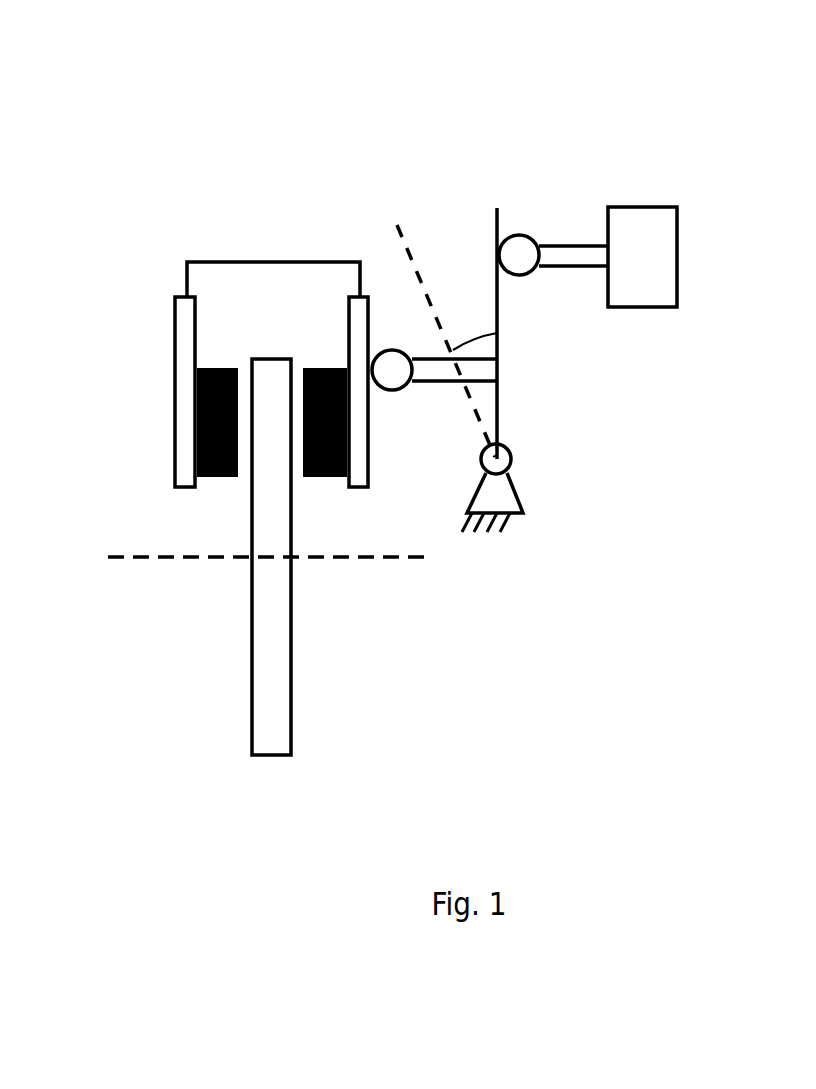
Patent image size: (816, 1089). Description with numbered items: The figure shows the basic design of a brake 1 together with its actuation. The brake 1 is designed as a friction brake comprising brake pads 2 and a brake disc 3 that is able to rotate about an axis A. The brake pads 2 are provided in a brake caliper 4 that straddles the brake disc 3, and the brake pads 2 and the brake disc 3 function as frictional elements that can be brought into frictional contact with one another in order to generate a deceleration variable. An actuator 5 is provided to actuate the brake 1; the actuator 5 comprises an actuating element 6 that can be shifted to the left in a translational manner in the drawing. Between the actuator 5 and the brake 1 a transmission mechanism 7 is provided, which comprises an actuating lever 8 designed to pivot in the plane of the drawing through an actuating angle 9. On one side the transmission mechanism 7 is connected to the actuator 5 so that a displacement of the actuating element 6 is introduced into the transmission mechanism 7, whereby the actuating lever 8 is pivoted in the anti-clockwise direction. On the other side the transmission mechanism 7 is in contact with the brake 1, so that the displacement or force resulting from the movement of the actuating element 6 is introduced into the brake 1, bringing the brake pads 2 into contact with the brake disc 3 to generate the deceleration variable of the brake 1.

The brake 1 is at (135, 256).
The brake pads 2 is at (213, 477).
The brake disc 3 is at (293, 725).
The brake caliper 4 is at (282, 260).
The actuator 5 is at (639, 146).
The actuating element 6 is at (538, 240).
The transmission mechanism 7 is at (582, 482).
The actuating lever 8 is at (497, 350).
The actuating angle 9 is at (470, 333).
The axis A is at (425, 557).